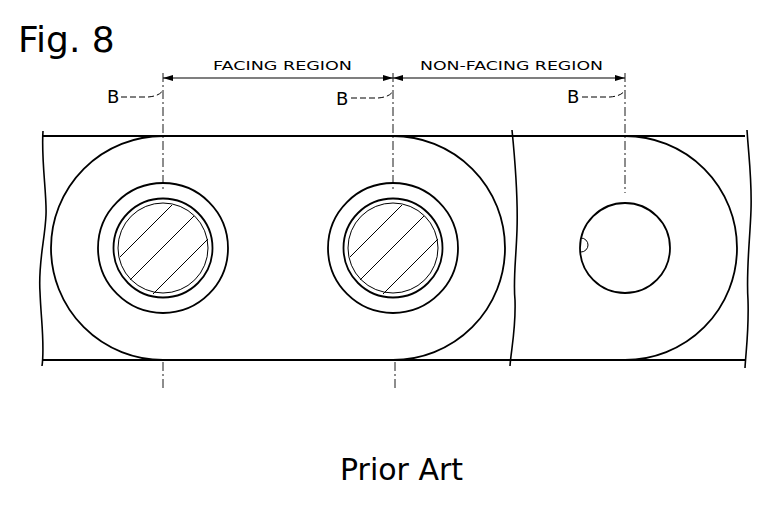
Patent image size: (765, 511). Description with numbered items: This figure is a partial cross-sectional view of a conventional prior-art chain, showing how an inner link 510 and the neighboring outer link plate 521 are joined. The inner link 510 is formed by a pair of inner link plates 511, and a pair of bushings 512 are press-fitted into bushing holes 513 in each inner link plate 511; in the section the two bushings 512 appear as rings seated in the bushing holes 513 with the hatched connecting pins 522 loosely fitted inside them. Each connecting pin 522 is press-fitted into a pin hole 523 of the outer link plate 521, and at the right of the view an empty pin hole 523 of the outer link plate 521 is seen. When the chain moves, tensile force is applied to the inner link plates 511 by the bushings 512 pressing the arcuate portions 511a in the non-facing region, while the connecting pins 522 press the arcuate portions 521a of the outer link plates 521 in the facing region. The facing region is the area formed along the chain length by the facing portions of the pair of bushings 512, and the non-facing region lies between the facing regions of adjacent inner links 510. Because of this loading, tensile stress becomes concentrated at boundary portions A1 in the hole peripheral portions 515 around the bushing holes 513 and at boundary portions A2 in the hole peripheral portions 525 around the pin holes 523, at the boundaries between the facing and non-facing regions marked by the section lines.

The inner link 510 is at (272, 362).
The inner link plate 511 is at (318, 347).
The arcuate portion of the inner link plate 511a is at (72, 247).
The bushing 512 is at (352, 213).
The bushing hole 513 is at (336, 241).
The hole peripheral portion 515 is at (352, 305).
The outer link plate 521 is at (65, 347).
The arcuate portion of the outer link plate 521a is at (682, 184).
The connecting pin 522 is at (142, 220).
The pin hole 523 is at (570, 235).
The hole peripheral portion 525 is at (597, 290).
The boundary portion A1 is at (393, 183).
The boundary portion A2 is at (622, 203).